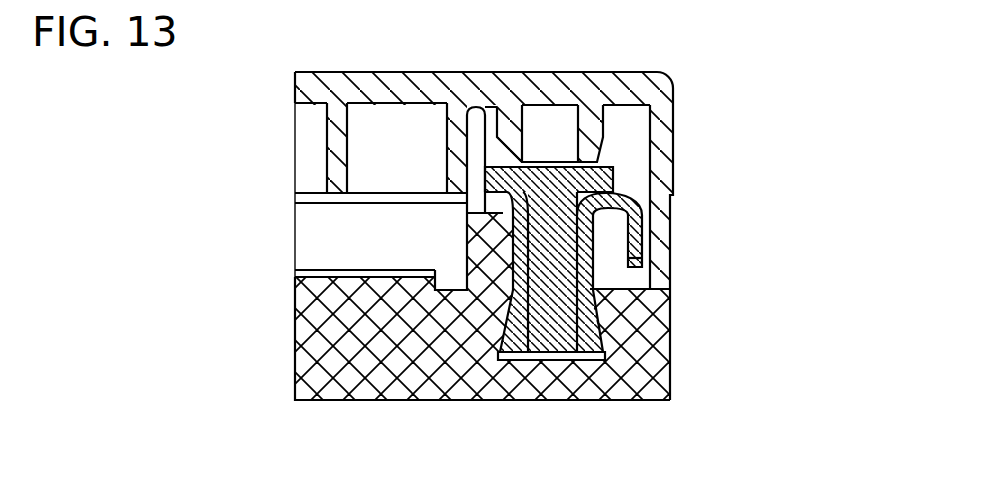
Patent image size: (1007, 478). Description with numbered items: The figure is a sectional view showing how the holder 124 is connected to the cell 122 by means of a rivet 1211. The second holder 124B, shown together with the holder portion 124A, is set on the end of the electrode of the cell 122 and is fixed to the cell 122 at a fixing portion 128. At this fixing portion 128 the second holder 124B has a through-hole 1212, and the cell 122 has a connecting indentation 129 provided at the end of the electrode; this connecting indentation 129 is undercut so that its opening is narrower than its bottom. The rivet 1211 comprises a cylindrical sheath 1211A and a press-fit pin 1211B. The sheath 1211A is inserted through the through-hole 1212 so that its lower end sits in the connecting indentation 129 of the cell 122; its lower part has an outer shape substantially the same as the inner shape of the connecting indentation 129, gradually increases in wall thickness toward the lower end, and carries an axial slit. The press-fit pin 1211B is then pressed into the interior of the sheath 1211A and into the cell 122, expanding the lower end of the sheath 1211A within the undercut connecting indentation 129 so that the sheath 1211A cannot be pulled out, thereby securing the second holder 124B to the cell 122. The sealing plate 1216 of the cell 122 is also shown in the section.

The cell 122 is at (547, 336).
The holder 124 is at (380, 236).
The upper housing portion 124A is at (296, 94).
The second holder 124B is at (320, 246).
The fixing portion 128 is at (636, 283).
The connecting indentation 129 is at (538, 361).
The rivet 1211 is at (693, 246).
The sheath 1211A is at (640, 232).
The press-fit pin 1211B is at (613, 184).
The through-hole 1212 is at (510, 250).
The sealing plate 1216 is at (630, 335).